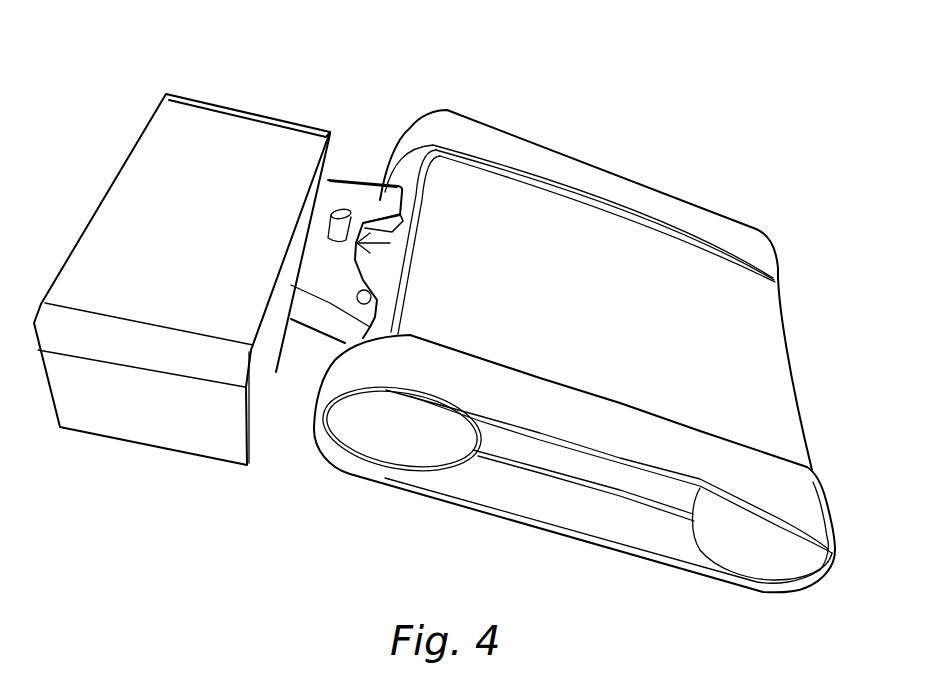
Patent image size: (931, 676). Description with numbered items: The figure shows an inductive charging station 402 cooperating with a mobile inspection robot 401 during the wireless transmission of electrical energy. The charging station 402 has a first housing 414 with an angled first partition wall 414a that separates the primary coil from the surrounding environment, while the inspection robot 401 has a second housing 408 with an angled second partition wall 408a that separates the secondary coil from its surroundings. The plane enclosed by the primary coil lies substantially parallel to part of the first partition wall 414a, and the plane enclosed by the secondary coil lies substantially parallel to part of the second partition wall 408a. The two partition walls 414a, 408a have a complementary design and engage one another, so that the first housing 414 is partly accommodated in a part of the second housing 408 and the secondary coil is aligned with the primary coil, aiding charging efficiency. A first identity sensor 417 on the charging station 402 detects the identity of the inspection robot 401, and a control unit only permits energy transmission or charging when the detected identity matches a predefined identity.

The inspection robot 401 is at (621, 283).
The inductive charging station 402 is at (350, 148).
The second housing 408 is at (392, 232).
The second partition wall 408a is at (390, 243).
The first housing 414 is at (327, 273).
The first partition wall 414a is at (376, 219).
The first identity sensor 417 is at (371, 292).